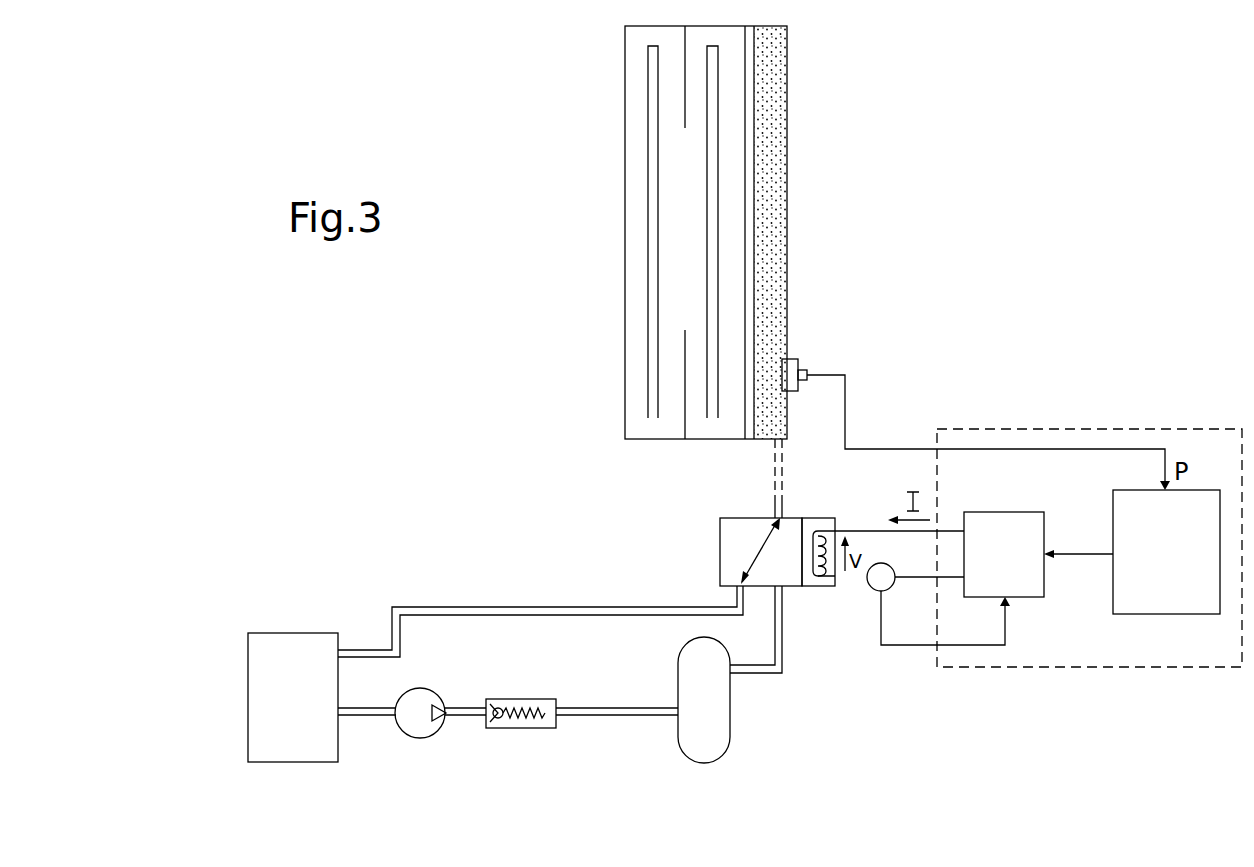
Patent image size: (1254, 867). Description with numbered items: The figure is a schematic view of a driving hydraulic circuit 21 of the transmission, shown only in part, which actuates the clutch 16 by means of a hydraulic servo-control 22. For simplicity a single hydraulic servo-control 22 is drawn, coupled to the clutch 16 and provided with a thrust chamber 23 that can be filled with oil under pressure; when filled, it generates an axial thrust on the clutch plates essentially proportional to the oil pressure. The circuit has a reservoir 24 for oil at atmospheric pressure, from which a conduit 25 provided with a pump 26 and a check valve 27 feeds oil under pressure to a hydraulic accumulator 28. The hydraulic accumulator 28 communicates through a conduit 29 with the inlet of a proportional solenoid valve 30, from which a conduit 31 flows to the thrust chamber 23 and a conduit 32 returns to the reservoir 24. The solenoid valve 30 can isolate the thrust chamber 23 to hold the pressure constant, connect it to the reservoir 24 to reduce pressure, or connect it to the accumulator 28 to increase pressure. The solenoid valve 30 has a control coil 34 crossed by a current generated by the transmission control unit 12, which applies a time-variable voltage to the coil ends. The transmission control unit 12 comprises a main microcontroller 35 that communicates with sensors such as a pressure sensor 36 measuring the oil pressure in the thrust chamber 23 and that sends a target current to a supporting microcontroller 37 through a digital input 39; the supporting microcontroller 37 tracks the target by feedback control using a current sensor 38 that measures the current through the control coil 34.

The transmission control unit 12 is at (1097, 429).
The clutch 16 is at (675, 457).
The driving hydraulic circuit 21 is at (1055, 231).
The hydraulic servo-control 22 is at (850, 164).
The thrust chamber 23 is at (772, 103).
The reservoir 24 is at (254, 717).
The conduit 25 is at (372, 716).
The pump 26 is at (418, 738).
The check valve 27 is at (527, 730).
The hydraulic accumulator 28 is at (680, 745).
The conduit 29 is at (782, 630).
The proportional solenoid valve 30 is at (781, 510).
The conduit 31 is at (775, 506).
The conduit 32 is at (516, 607).
The control coil 34 is at (815, 520).
The main microcontroller 35 is at (1166, 552).
The pressure sensor 36 is at (798, 365).
The supporting microcontroller 37 is at (1004, 554).
The current sensor 38 is at (875, 590).
The digital input 39 is at (1087, 556).